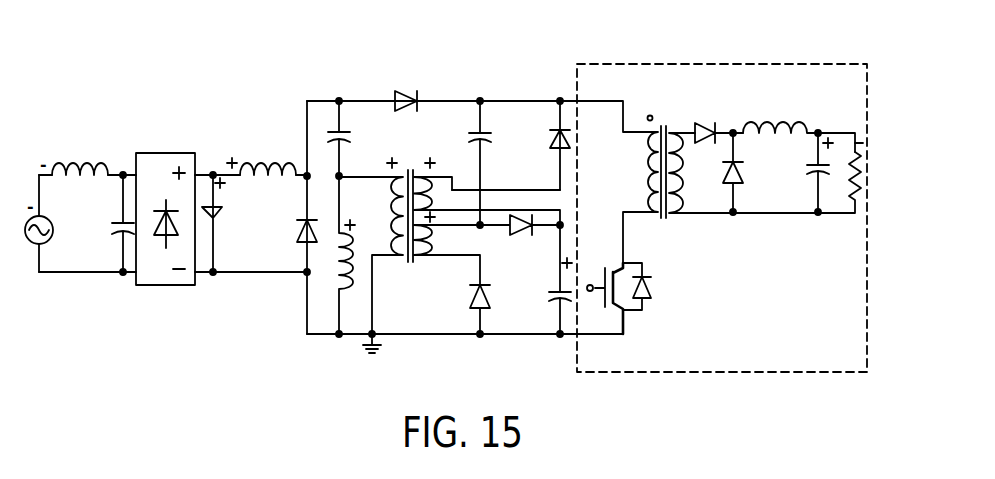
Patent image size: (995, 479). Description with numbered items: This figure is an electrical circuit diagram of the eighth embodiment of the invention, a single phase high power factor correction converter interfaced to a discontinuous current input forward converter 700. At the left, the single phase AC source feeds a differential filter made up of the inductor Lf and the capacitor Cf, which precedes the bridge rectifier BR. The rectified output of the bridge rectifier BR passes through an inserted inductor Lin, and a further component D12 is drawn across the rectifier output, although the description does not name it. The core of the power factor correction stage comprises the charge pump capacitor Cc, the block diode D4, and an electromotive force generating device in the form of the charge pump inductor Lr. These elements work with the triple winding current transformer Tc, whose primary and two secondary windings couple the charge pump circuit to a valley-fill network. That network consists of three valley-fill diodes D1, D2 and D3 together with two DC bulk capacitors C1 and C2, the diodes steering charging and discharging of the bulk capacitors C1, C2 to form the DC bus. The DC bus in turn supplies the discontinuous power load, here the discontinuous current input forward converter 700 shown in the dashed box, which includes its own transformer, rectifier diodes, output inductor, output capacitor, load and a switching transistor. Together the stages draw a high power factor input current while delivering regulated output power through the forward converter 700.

The inductor Lf is at (80, 151).
The capacitor Cf is at (107, 223).
The bridge rectifier BR is at (165, 285).
The inserted inductor Lin is at (261, 156).
The diode / switching element D12 is at (220, 211).
The charge pump capacitor Cc is at (350, 138).
The charge pump inductor Lr is at (333, 255).
The block diode D4 is at (406, 86).
The DC bulk capacitor C1 is at (466, 161).
The valley-fill diode D2 is at (543, 145).
The triple winding current transformer Tc is at (449, 246).
The valley-fill diode D3 is at (520, 243).
The valley-fill diode D1 is at (462, 309).
The DC bulk capacitor C2 is at (542, 279).
The discontinuous current input forward converter 700 is at (752, 63).